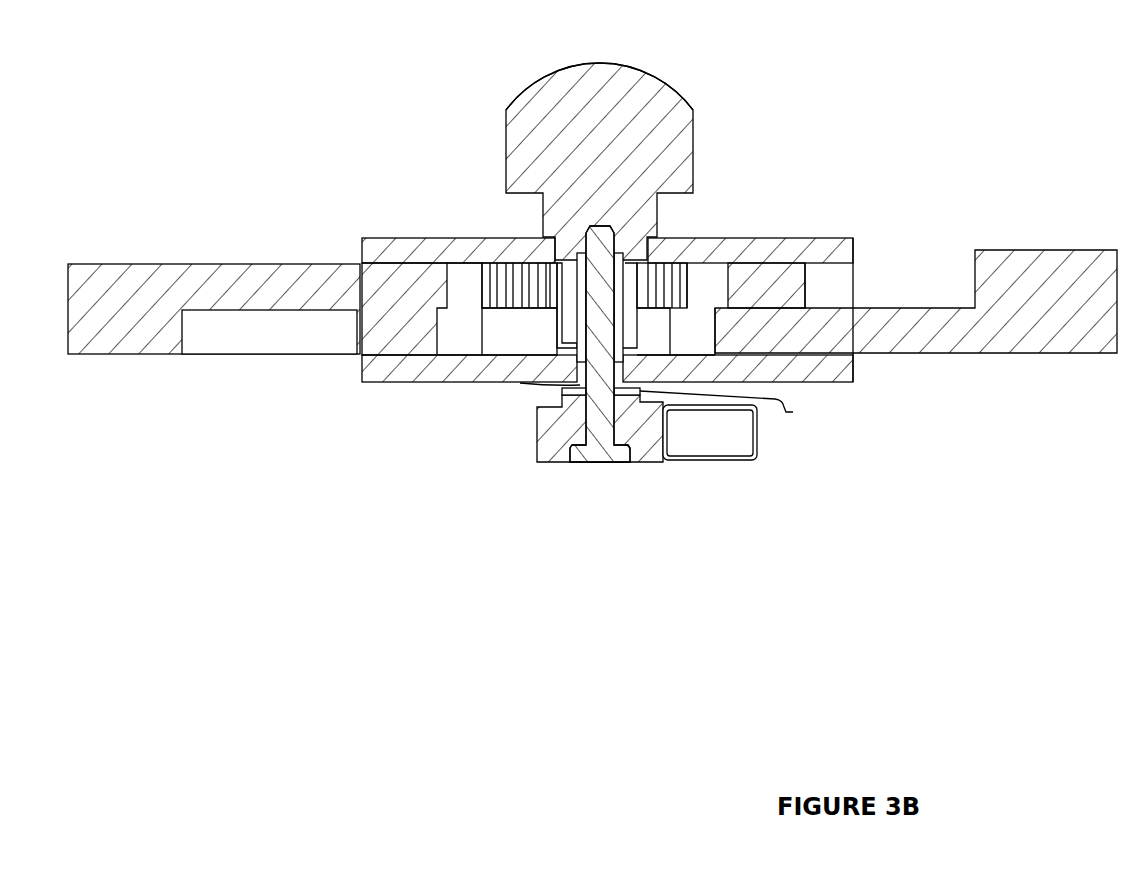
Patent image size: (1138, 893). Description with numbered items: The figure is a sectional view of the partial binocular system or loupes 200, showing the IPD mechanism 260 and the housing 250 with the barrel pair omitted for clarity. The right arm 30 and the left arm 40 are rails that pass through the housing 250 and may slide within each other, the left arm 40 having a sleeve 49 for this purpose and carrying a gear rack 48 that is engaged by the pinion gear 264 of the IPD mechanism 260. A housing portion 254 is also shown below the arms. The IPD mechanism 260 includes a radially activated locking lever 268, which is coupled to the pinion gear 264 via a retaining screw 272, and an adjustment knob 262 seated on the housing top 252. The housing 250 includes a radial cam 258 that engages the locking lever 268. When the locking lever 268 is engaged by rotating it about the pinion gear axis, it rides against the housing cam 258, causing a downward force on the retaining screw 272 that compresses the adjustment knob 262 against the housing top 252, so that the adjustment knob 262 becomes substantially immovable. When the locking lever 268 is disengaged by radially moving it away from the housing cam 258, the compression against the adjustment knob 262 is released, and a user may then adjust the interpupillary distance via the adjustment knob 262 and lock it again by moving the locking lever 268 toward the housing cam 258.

The partial binocular system 200 is at (568, 731).
The right arm 30 is at (1058, 353).
The left arm 40 is at (123, 355).
The sleeve 49 is at (240, 338).
The gear rack 48 is at (482, 263).
The housing 250 is at (727, 237).
The housing top 252 is at (832, 238).
The housing 254 is at (390, 382).
The radial cam 258 is at (783, 399).
The IPD mechanism 260 is at (558, 64).
The adjustment knob 262 is at (661, 79).
The pinion gear 264 is at (553, 343).
The radially activated locking lever 268 is at (687, 452).
The retaining screw 272 is at (597, 463).